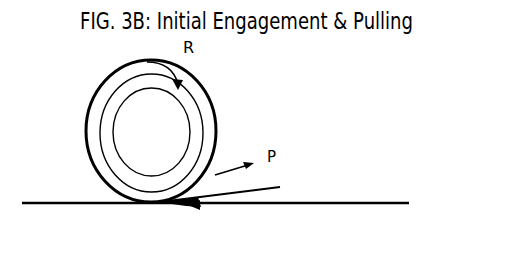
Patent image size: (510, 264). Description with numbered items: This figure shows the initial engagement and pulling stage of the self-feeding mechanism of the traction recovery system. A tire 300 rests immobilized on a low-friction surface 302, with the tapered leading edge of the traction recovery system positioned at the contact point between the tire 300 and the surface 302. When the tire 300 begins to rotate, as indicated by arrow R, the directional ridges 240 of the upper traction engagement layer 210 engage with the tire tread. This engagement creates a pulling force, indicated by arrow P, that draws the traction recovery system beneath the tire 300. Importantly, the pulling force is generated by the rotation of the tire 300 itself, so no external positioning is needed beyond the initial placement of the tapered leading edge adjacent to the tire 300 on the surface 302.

The tire 300 is at (139, 131).
The low-friction surface 302 is at (240, 201).
The upper traction engagement layer 210 is at (191, 216).
The directional ridges 240 is at (190, 207).